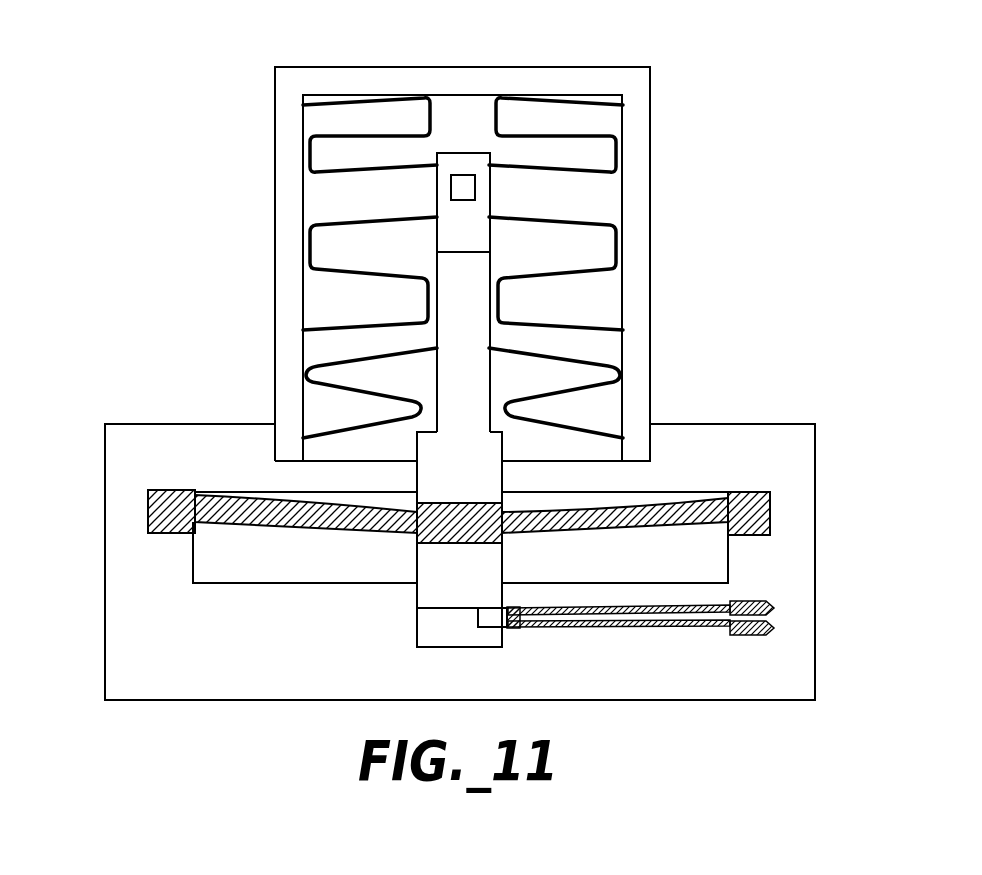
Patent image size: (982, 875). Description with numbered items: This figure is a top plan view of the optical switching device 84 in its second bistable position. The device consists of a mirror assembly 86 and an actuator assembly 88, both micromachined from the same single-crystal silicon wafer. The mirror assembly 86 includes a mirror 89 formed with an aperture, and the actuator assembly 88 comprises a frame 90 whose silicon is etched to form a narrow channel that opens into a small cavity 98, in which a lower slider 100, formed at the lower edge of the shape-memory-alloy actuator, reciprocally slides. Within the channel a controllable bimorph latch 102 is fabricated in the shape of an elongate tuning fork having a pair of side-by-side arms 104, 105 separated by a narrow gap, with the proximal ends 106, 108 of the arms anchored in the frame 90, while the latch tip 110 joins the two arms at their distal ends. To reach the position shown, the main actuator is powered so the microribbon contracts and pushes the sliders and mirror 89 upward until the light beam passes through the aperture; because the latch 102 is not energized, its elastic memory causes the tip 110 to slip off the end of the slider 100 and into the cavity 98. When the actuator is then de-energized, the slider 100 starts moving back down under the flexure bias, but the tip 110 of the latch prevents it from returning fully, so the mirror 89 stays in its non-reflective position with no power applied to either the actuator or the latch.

The optical switching device 84 is at (183, 113).
The mirror assembly 86 is at (268, 240).
The actuator assembly 88 is at (100, 512).
The mirror 89 is at (458, 152).
The frame 90 is at (673, 425).
The small cavity 98 is at (420, 627).
The lower slider 100 is at (427, 594).
The bimorph latch 102 is at (701, 605).
The arm 104 is at (717, 603).
The arm 105 is at (683, 628).
The proximal end 106 is at (775, 604).
The proximal end 108 is at (775, 630).
The latch tip 110 is at (485, 627).